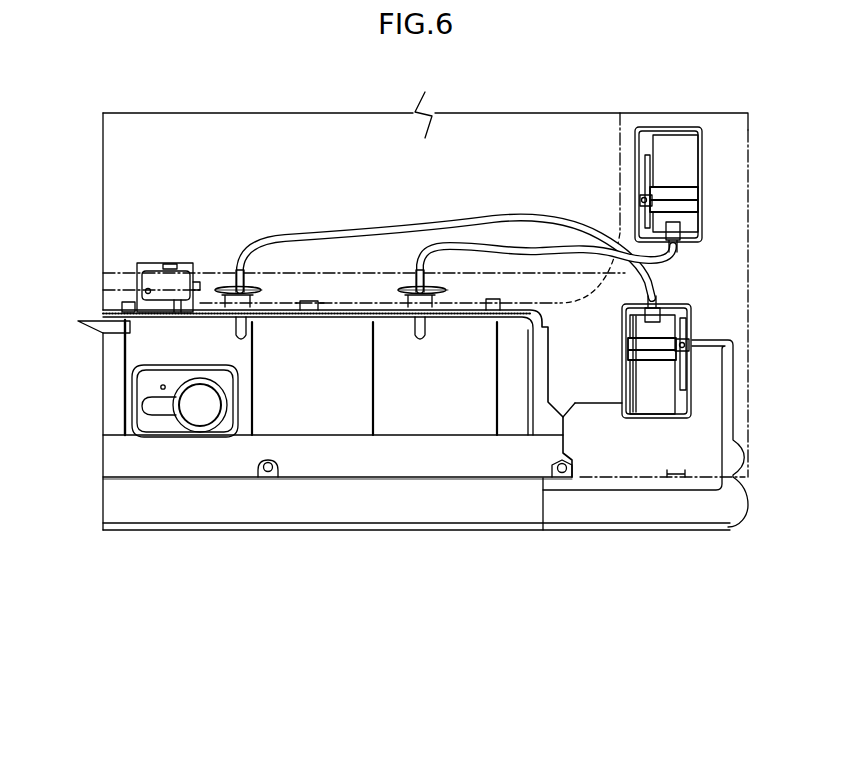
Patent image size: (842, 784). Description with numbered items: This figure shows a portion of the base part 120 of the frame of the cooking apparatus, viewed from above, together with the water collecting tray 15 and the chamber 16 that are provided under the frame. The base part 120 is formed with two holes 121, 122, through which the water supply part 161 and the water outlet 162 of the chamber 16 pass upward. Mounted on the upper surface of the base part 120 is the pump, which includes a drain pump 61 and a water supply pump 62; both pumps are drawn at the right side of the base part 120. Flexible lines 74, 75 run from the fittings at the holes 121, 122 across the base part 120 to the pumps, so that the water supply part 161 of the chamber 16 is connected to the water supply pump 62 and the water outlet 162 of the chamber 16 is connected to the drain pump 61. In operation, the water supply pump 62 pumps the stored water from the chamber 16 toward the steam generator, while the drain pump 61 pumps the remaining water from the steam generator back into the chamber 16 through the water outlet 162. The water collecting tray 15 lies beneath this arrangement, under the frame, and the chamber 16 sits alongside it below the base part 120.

The water collecting tray 15 is at (406, 510).
The chamber 16 is at (140, 351).
The drain pump 61 is at (688, 322).
The water supply pump 62 is at (688, 176).
The first hose 74 is at (527, 254).
The second hose 75 is at (506, 216).
The base part 120 is at (311, 291).
The hole 121 is at (253, 290).
The hole 122 is at (437, 290).
The water supply part 161 is at (217, 289).
The water outlet 162 is at (414, 288).